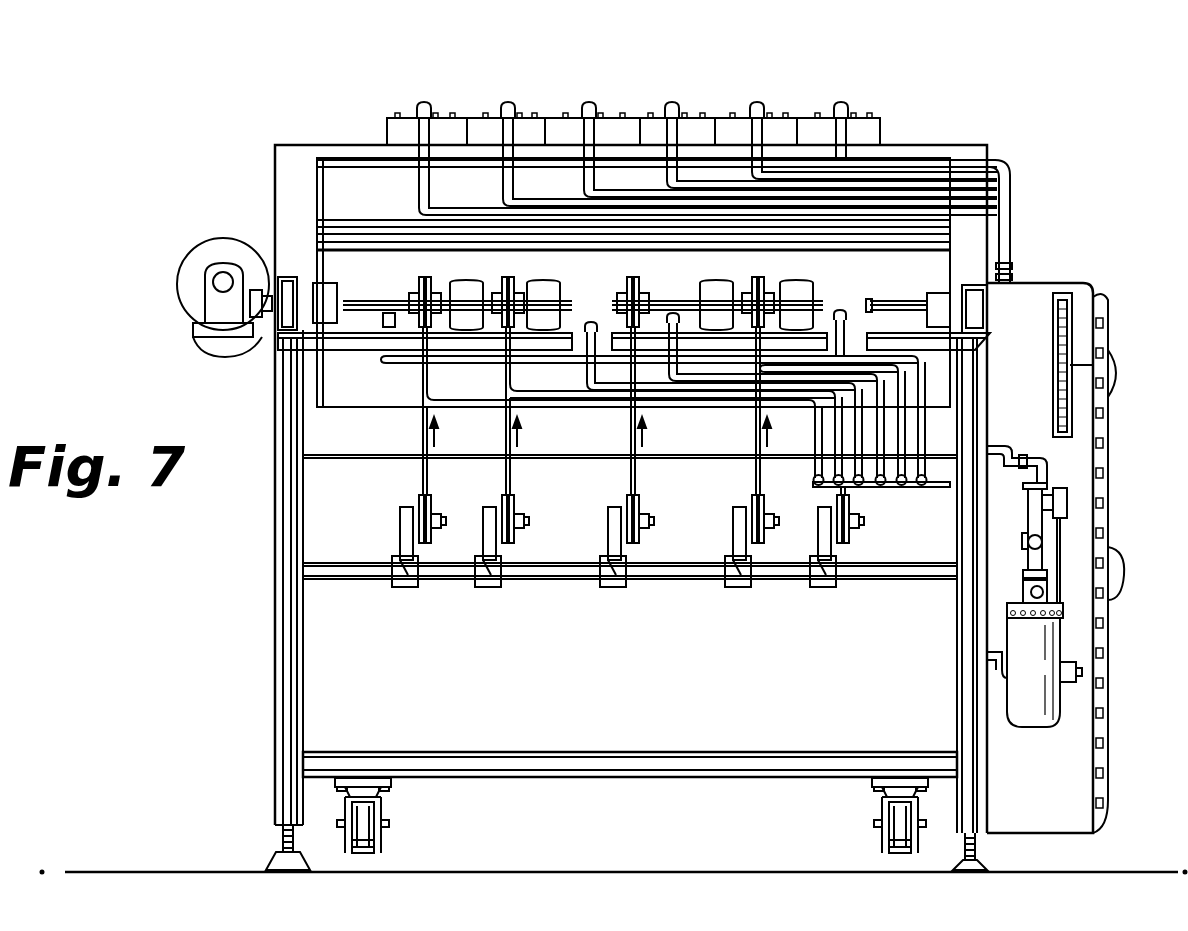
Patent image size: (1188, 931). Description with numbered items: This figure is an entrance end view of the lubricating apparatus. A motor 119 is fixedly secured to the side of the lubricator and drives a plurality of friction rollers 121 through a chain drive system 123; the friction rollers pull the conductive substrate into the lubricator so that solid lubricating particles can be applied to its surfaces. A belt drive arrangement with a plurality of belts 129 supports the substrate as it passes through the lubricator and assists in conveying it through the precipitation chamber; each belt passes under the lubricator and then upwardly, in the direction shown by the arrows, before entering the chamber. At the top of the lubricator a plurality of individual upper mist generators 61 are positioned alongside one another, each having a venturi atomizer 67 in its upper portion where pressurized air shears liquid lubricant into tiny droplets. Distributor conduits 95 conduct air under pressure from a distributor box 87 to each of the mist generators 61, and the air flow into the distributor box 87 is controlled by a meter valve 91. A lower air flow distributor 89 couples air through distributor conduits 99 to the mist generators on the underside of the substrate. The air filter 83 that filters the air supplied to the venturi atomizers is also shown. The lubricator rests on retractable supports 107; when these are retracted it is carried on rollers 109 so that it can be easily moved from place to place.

The upper mist generator 61 is at (737, 133).
The venturi atomizer 67 is at (408, 110).
The distributor conduits 95 is at (665, 105).
The distributor box 87 is at (1037, 300).
The lower air flow distributor 89 is at (1013, 534).
The meter valve 91 is at (1062, 483).
The air filter 83 is at (1038, 713).
The distributor conduits 99 is at (908, 487).
The motor 119 is at (212, 242).
The friction rollers 121 is at (548, 282).
The chain drive system 123 is at (266, 340).
The belts 129 is at (425, 492).
The supports 107 is at (278, 840).
The rollers 109 is at (370, 848).